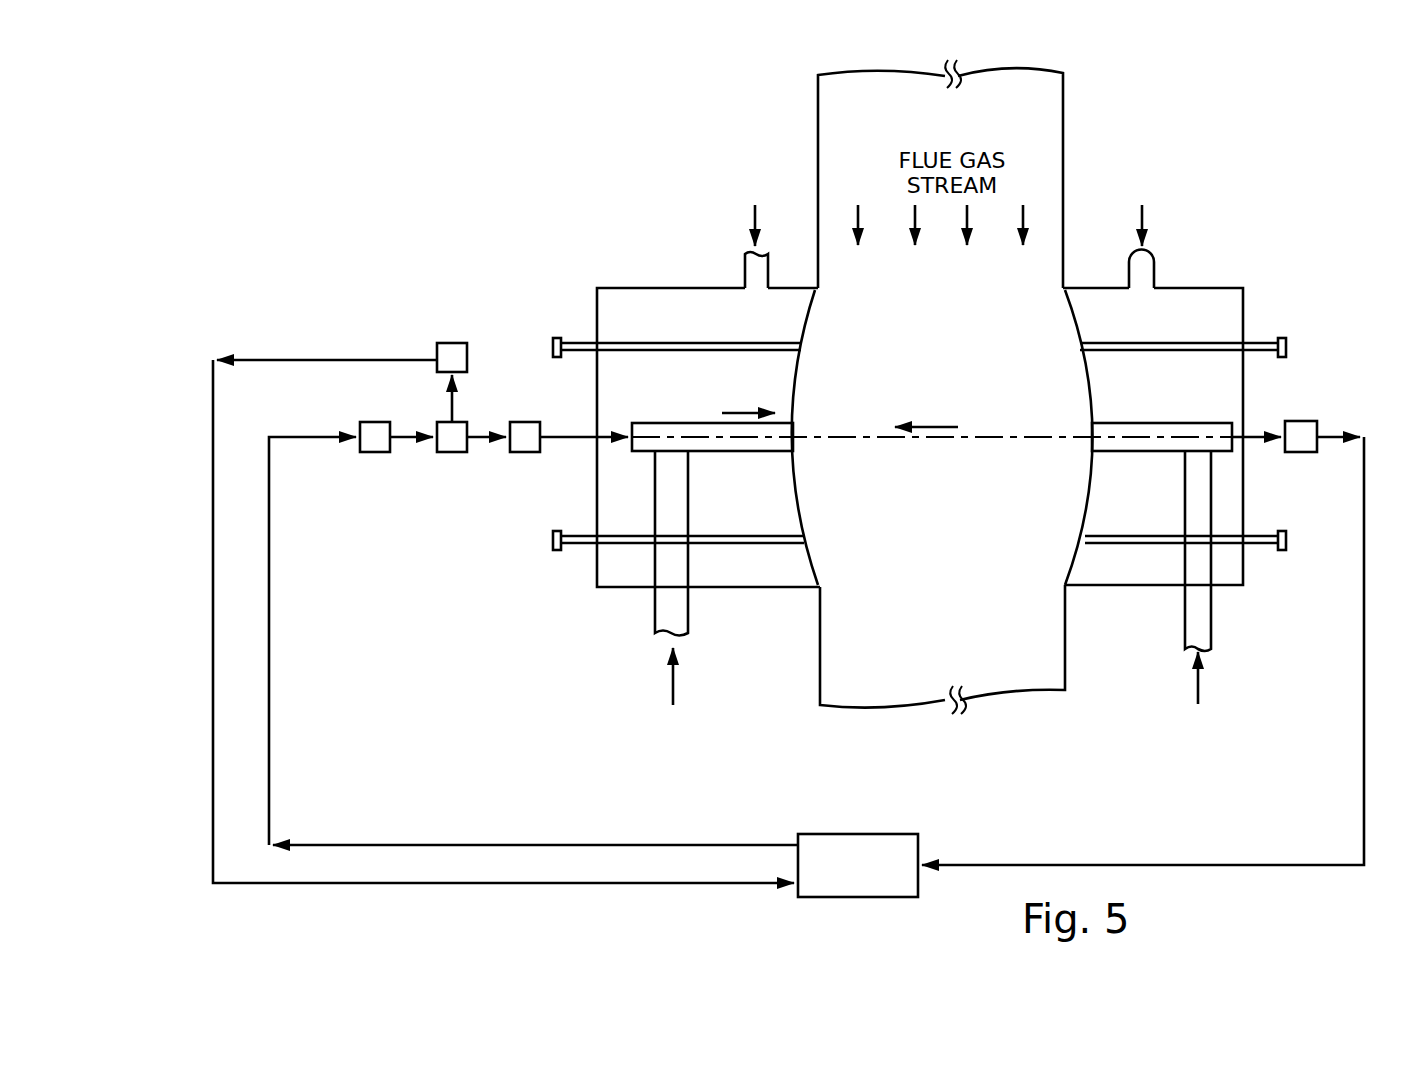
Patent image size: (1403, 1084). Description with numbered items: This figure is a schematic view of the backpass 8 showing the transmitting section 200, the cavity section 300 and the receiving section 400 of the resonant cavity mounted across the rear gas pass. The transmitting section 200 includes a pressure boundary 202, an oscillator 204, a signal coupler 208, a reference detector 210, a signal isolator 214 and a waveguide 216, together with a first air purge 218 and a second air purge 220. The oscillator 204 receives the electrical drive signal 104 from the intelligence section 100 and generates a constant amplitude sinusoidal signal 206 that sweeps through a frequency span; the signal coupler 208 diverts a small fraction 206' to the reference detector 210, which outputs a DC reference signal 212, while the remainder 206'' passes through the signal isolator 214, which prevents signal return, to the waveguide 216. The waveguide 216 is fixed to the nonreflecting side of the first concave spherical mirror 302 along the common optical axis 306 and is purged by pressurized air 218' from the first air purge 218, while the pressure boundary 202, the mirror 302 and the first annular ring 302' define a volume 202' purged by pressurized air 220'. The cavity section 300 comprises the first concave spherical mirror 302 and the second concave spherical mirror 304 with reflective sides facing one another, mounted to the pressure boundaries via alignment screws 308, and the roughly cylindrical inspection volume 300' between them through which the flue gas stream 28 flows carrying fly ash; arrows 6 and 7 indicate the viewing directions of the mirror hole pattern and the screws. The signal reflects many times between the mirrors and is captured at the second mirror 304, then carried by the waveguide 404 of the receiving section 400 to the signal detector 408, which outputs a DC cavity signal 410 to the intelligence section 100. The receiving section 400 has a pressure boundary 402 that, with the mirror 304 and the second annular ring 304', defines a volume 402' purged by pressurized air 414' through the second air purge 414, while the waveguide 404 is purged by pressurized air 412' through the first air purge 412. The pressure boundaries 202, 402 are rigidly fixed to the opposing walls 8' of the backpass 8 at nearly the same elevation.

The backpass 8 is at (941, 387).
The opposing walls 8' is at (940, 380).
The flue gas stream 28 is at (940, 225).
The transmitting section 200 is at (560, 176).
The receiving section 400 is at (1242, 176).
The cavity section 300 is at (950, 282).
The inspection volume 300' is at (952, 371).
The pressure boundary 202 is at (674, 416).
The volume 202' is at (715, 371).
The pressure boundary 402 is at (1185, 414).
The volume 402' is at (1172, 371).
The second air purge 220 is at (721, 255).
The pressurized air 220' is at (831, 379).
The second air purge 414 is at (1175, 255).
The pressurized air 414' is at (1073, 379).
The first concave spherical mirror 302 is at (846, 437).
The first annular ring 302' is at (756, 441).
The second concave spherical mirror 304 is at (1048, 437).
The second annular ring 304' is at (1133, 439).
The alignment screws 308 is at (557, 338).
The waveguide 216 is at (694, 423).
The waveguide 404 is at (1115, 423).
The common optical axis 306 is at (981, 437).
The arrow 7 is at (748, 397).
The arrow 6 is at (926, 412).
The first air purge 218 is at (636, 549).
The pressurized air 218' is at (771, 565).
The first air purge 412 is at (1237, 551).
The pressurized air 412' is at (1109, 565).
The oscillator 204 is at (372, 452).
The oscillator output signal 206 is at (351, 606).
The small fraction of oscillator output signal 206' is at (498, 392).
The remainder of oscillator output signal 206'' is at (913, 397).
The signal coupler 208 is at (455, 452).
The reference detector 210 is at (437, 345).
The reference signal 212 is at (324, 360).
The signal isolator 214 is at (522, 452).
The signal detector 408 is at (1305, 421).
The cavity signal 410 is at (1364, 730).
The electrical drive signal 104 is at (370, 845).
The intelligence section 100 is at (830, 879).